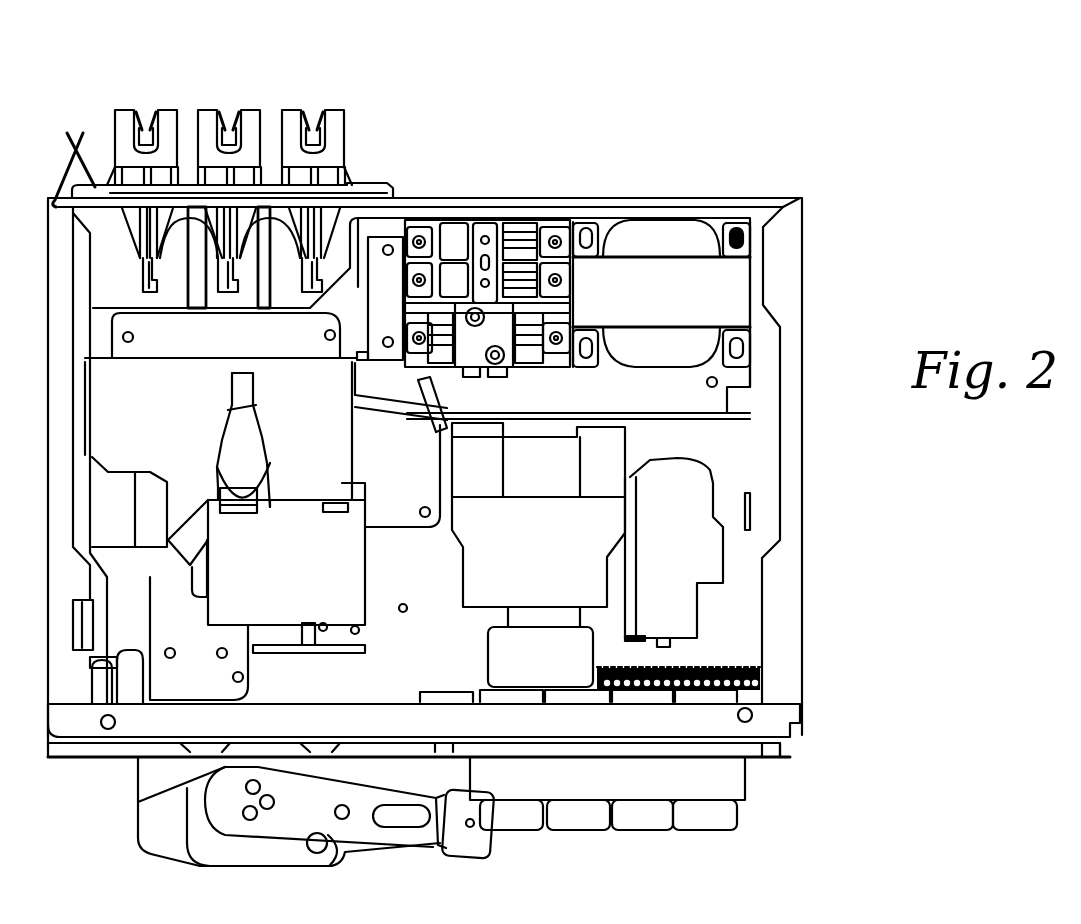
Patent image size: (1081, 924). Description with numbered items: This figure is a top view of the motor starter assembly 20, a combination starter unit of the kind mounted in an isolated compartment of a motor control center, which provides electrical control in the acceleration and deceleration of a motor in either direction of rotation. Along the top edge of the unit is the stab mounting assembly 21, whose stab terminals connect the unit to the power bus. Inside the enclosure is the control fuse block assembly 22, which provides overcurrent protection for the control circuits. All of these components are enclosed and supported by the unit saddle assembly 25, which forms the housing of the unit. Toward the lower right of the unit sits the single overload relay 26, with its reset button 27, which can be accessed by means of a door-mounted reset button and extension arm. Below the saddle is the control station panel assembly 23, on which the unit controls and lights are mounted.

The motor starter assembly 20 is at (751, 90).
The stab mounting assembly 21 is at (203, 110).
The control fuse block assembly 22 is at (483, 220).
The control station panel assembly 23 is at (747, 778).
The unit saddle assembly 25 is at (806, 638).
The overload relay 26 is at (697, 601).
The reset button 27 is at (672, 642).